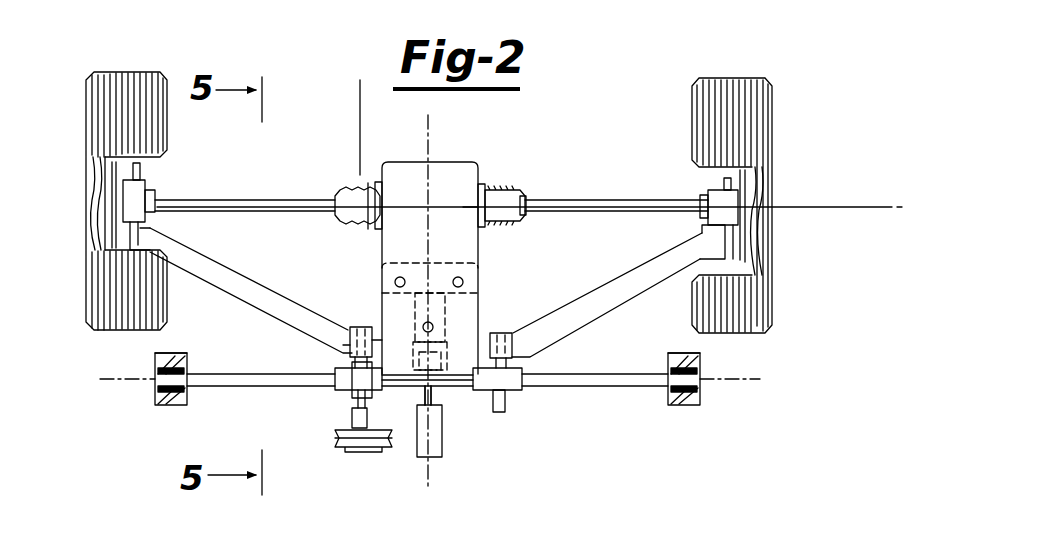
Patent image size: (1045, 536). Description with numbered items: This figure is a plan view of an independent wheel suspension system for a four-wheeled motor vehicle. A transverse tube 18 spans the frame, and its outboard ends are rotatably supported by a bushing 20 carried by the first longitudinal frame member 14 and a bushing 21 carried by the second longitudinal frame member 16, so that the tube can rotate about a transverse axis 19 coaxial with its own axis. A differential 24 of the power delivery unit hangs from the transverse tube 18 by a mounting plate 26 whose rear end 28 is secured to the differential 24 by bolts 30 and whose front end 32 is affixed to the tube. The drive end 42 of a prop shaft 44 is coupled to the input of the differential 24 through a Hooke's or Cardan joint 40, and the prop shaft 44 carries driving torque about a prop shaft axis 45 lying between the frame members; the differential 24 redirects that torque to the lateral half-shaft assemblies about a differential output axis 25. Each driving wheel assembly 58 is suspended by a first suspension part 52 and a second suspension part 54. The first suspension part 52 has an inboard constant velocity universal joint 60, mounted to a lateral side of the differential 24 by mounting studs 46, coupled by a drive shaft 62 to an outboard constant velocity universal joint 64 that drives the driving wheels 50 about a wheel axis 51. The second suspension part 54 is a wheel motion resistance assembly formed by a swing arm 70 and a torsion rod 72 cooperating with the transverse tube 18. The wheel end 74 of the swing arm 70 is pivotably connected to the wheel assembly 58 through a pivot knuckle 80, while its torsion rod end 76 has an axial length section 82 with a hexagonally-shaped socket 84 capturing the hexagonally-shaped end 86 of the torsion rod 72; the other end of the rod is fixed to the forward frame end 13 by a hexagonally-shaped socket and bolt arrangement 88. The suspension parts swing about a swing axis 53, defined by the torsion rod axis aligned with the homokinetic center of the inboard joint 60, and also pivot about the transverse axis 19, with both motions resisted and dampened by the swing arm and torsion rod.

The forward frame end 13 is at (335, 438).
The first longitudinal frame member 14 is at (145, 394).
The second longitudinal frame member 16 is at (713, 397).
The transverse tube 18 is at (245, 382).
The transverse axis 19 is at (103, 380).
The bushing 20 is at (153, 370).
The bushing 21 is at (700, 364).
The differential 24 is at (468, 176).
The differential output axis 25 is at (470, 207).
The mounting plate 26 is at (478, 297).
The rear end 28 is at (462, 261).
The bolts 30 is at (454, 280).
The front end 32 is at (462, 382).
The Cardan joint 40 is at (466, 320).
The drive end 42 is at (415, 425).
The prop shaft 44 is at (440, 443).
The prop shaft axis 45 is at (432, 140).
The mounting studs 46 is at (372, 222).
The driving wheels 50 is at (165, 87).
The wheel axis 51 is at (837, 207).
The first suspension part 52 is at (300, 164).
The swing axis 53 is at (358, 84).
The second suspension part 54 is at (295, 261).
The driving wheel assembly 58 is at (182, 152).
The inboard constant velocity universal joint 60 is at (368, 183).
The drive shaft 62 is at (312, 198).
The outboard constant velocity universal joint 64 is at (155, 196).
The swing arm 70 is at (252, 305).
The torsion rod 72 is at (353, 418).
The wheel end 74 is at (168, 226).
The torsion rod end 76 is at (346, 340).
The pivot knuckle 80 is at (160, 231).
The axial length section 82 is at (375, 333).
The hexagonally-shaped socket 84 is at (350, 326).
The hexagonally-shaped end 86 is at (372, 324).
The hexagonally-shaped socket and bolt arrangement 88 is at (338, 446).